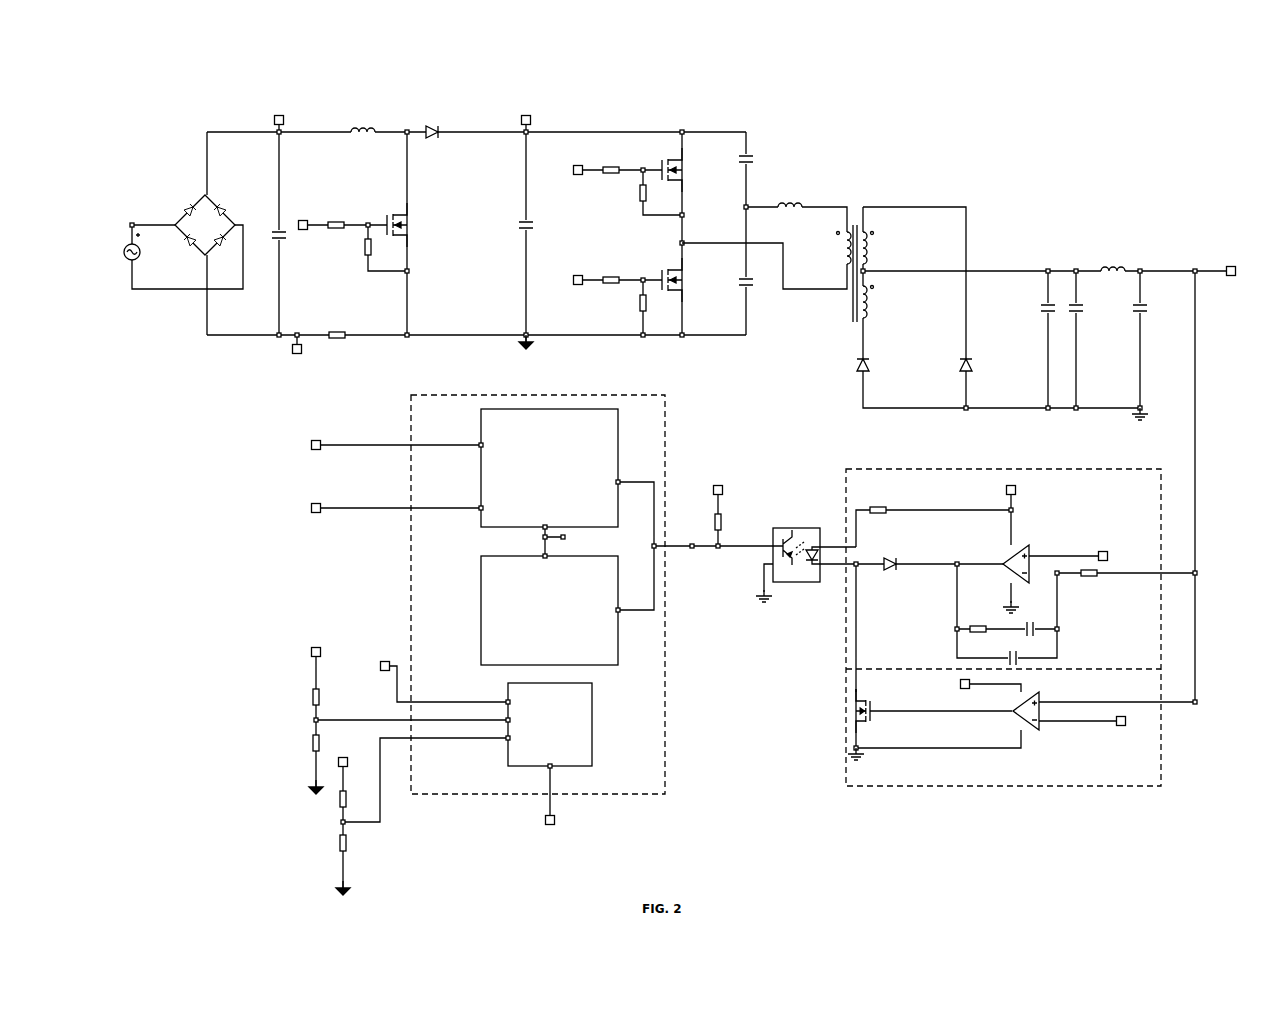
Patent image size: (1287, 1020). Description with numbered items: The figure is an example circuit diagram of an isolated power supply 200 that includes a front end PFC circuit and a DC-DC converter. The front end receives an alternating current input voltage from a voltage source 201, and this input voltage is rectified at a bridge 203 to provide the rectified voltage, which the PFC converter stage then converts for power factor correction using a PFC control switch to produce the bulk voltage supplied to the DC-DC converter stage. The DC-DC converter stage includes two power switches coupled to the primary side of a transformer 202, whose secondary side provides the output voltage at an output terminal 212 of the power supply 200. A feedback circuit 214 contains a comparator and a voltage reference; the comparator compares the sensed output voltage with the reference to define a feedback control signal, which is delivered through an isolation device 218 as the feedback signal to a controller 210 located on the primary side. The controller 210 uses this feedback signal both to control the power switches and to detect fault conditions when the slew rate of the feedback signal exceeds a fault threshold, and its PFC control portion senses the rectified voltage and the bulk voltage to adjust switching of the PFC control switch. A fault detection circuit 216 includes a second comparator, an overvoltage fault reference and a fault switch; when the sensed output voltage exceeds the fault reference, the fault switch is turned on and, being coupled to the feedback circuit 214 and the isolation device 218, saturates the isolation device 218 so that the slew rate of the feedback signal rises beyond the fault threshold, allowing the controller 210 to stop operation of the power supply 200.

The power supply 200 is at (1146, 128).
The voltage source 201 is at (121, 261).
The transformer 202 is at (856, 216).
The bridge 203 is at (200, 206).
The controller 210 is at (665, 717).
The output terminal 212 is at (1231, 278).
The feedback circuit 214 is at (905, 469).
The fault detection circuit 216 is at (908, 786).
The isolation device 218 is at (800, 528).